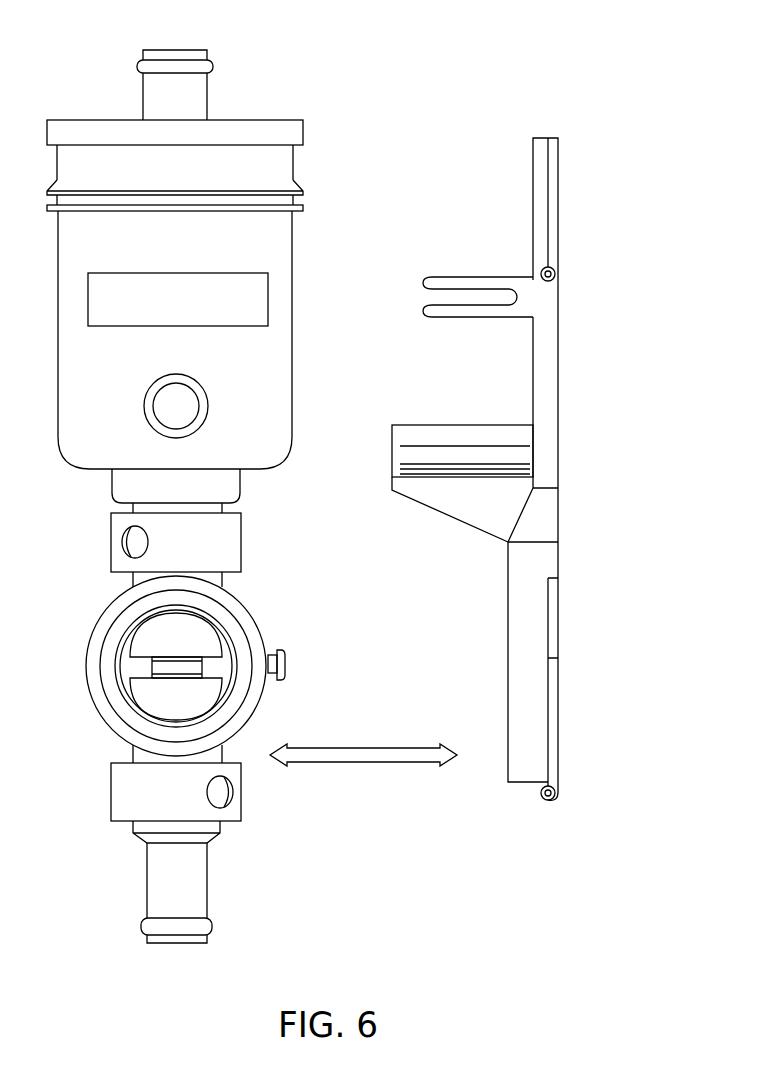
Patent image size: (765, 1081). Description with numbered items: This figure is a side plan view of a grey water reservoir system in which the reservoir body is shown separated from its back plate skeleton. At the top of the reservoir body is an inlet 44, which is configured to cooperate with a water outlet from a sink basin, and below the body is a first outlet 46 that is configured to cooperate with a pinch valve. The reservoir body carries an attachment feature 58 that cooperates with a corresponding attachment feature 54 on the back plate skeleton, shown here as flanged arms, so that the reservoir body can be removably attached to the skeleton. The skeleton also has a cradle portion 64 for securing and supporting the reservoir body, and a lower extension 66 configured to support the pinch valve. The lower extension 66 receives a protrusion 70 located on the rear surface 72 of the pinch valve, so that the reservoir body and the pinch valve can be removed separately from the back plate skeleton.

The inlet 44 is at (203, 77).
The attachment feature 58 is at (220, 221).
The first outlet 46 is at (237, 483).
The rear surface 72 is at (247, 603).
The protrusion 70 is at (287, 670).
The attachment feature 54 is at (580, 343).
The cradle portion 64 is at (472, 438).
The lower extension 66 is at (537, 695).